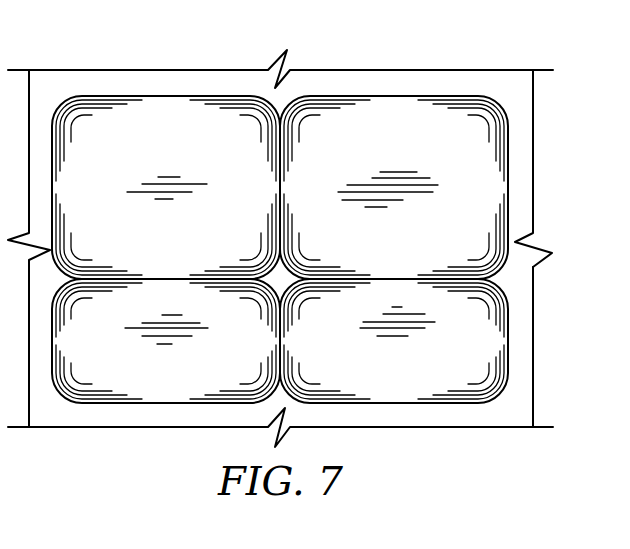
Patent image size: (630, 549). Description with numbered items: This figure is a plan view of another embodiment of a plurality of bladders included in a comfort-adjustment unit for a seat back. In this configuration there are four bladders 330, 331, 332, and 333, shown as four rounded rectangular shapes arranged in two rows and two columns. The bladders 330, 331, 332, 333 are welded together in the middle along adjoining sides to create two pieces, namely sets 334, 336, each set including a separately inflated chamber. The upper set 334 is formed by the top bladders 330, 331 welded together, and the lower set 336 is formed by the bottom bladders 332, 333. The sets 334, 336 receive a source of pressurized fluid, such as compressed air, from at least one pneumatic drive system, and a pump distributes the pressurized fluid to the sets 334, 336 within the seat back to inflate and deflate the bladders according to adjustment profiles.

The bladder 330 is at (180, 72).
The bladder 331 is at (405, 72).
The bladder 332 is at (151, 426).
The bladder 333 is at (415, 426).
The set 334 is at (537, 163).
The set 336 is at (537, 323).